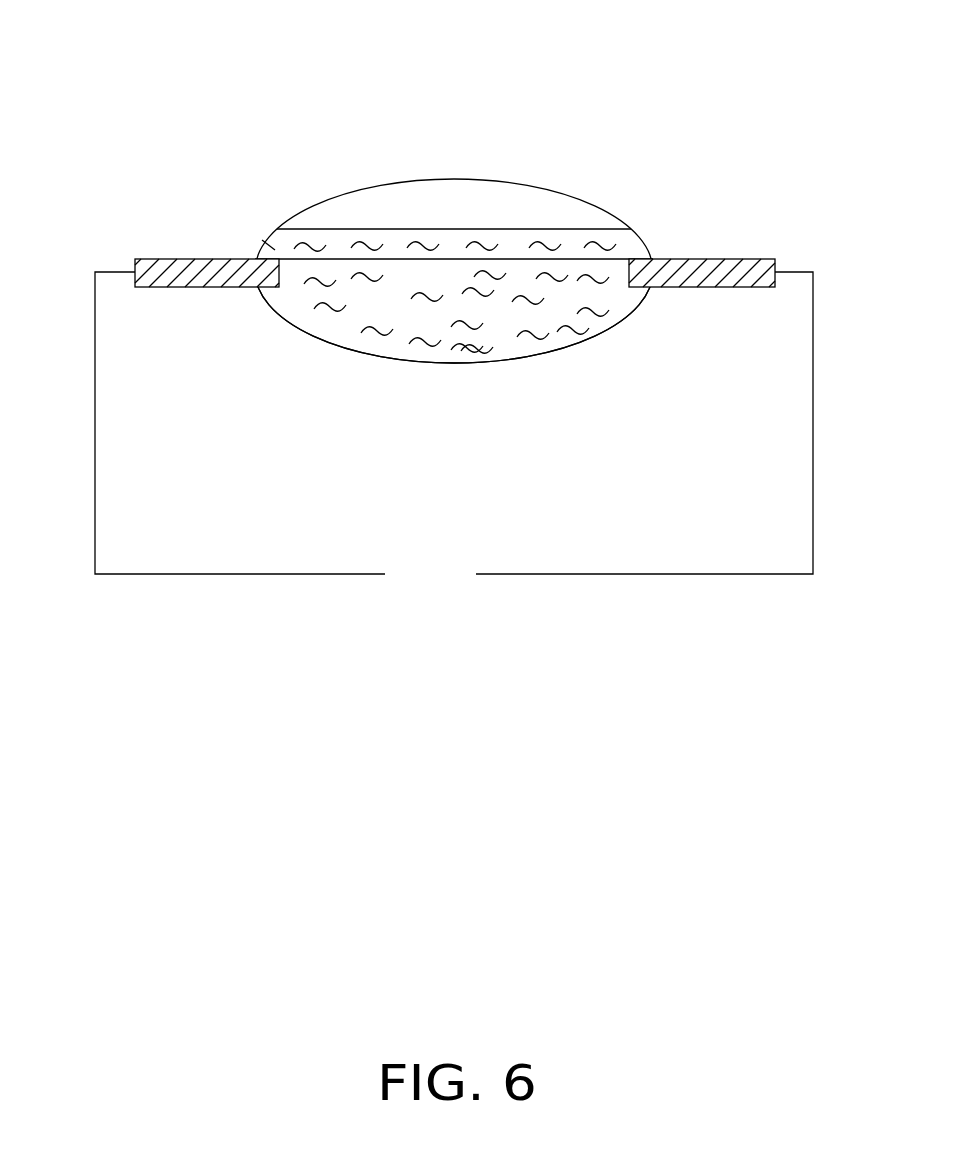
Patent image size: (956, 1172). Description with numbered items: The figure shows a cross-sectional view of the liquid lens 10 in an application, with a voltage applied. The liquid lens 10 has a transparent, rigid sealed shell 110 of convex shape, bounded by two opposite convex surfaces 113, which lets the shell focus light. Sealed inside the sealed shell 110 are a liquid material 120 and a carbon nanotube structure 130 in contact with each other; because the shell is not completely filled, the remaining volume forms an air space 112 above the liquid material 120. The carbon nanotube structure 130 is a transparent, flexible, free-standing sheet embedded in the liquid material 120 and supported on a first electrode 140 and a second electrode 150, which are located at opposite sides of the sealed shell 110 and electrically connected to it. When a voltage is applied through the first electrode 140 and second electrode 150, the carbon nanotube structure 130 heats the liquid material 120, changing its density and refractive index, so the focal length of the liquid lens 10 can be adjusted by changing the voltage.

The liquid lens 10 is at (441, 45).
The sealed shell 110 is at (512, 176).
The air space 112 is at (390, 212).
The convex surfaces 113 is at (455, 180).
The liquid material 120 is at (278, 248).
The carbon nanotube structure 130 is at (572, 258).
The first electrode 140 is at (187, 263).
The second electrode 150 is at (723, 267).